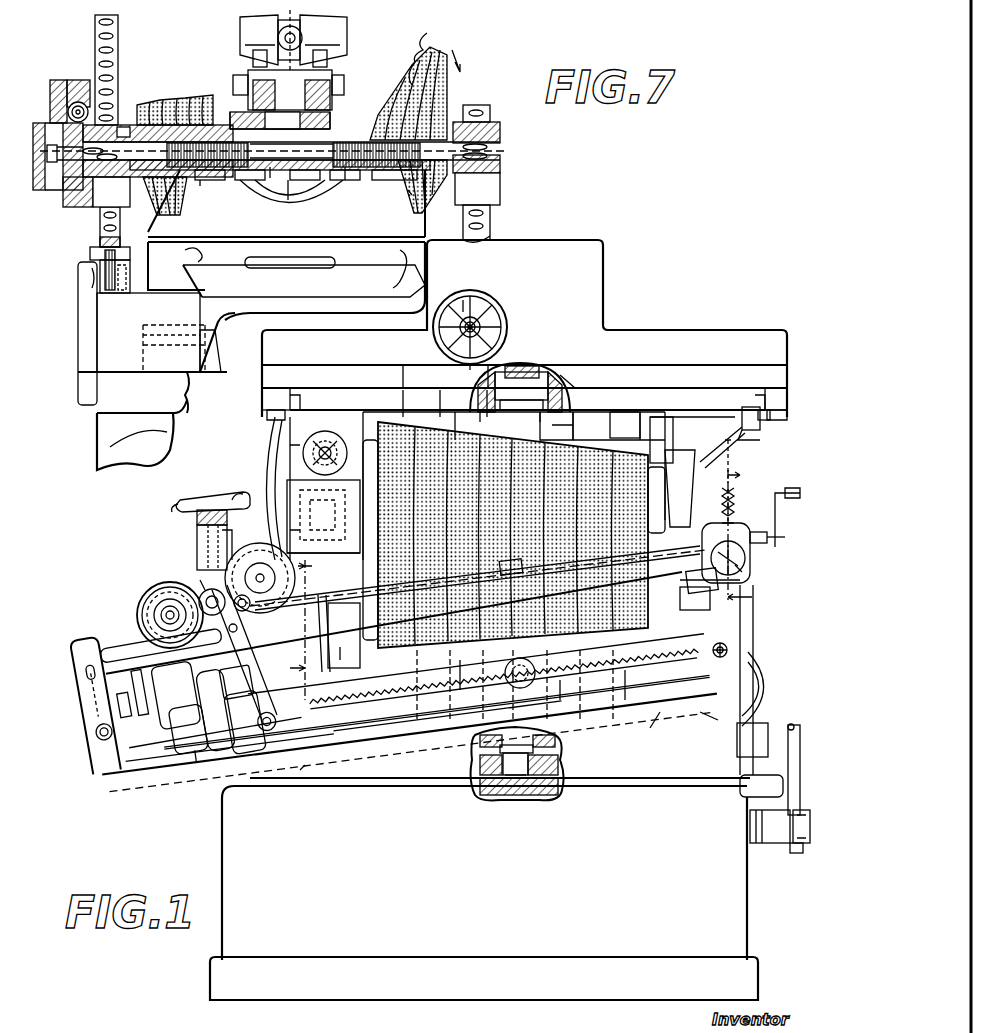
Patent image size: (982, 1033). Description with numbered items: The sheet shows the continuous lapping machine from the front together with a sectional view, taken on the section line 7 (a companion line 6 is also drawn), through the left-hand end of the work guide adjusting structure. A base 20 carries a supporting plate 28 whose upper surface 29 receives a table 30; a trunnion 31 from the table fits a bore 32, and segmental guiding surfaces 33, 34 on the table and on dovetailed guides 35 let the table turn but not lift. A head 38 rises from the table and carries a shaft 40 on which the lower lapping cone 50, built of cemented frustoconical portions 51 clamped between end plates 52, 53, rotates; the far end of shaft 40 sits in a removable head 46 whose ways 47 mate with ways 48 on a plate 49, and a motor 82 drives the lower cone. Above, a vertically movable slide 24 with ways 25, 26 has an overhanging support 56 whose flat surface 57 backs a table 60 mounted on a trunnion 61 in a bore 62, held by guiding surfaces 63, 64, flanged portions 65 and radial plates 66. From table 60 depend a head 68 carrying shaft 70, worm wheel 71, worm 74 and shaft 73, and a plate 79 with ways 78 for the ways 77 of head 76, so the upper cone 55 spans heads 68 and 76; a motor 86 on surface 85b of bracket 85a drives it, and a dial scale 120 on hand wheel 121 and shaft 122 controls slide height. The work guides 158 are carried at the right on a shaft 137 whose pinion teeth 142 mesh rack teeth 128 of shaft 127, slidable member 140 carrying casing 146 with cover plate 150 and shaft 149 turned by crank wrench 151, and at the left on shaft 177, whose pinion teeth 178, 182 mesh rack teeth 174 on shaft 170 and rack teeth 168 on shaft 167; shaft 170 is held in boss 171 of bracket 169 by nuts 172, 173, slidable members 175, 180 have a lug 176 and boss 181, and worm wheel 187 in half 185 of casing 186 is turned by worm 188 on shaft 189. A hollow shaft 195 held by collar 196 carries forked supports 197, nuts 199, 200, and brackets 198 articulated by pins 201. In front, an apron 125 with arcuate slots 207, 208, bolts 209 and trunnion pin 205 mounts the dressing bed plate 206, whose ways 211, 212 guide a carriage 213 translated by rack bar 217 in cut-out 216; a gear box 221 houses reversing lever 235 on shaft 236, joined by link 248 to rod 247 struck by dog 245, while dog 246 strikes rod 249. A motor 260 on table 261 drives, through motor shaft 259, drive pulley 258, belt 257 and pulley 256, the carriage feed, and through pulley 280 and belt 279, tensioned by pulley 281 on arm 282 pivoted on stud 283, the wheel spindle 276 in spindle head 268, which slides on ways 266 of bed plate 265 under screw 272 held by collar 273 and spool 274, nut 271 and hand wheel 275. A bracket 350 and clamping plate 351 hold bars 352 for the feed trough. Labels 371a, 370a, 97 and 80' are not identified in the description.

In FIG. 7, the rack teeth 174 is at (95, 27).
In FIG. 7, the casing half 185 is at (78, 80).
In FIG. 7, the casing 186 is at (60, 66).
In FIG. 7, the worm 188 is at (70, 104).
In FIG. 7, the shaft 189 is at (55, 110).
In FIG. 7, the worm wheel 187 is at (68, 186).
In FIG. 7, the slidable member 175 is at (83, 207).
In FIG. 7, the pinion teeth 178 is at (113, 192).
In FIG. 7, the lug 176 is at (128, 125).
In FIG. 7, the shaft 170 is at (100, 236).
In FIG. 1, the shaft 170 is at (310, 588).
In FIG. 7, the nut 173 is at (90, 256).
In FIG. 7, the boss 171 is at (96, 282).
In FIG. 7, the nut 172 is at (126, 280).
In FIG. 7, the bracket 169 is at (78, 352).
In FIG. 7, the table 30 is at (152, 322).
In FIG. 1, the table 30 is at (545, 740).
In FIG. 7, the segmental guiding surface 33 is at (222, 345).
In FIG. 1, the segmental guiding surface 33 is at (737, 740).
In FIG. 7, the horizontal upper surface 29 is at (142, 356).
In FIG. 1, the horizontal upper surface 29 is at (557, 760).
In FIG. 7, the dovetailed overlapping guides 35 is at (125, 372).
In FIG. 1, the dovetailed overlapping guides 35 is at (770, 735).
In FIG. 7, the segmental guiding surface 34 is at (215, 372).
In FIG. 7, the supporting plate 28 is at (108, 420).
In FIG. 1, the supporting plate 28 is at (560, 762).
In FIG. 7, the base 20 is at (105, 462).
In FIG. 1, the base 20 is at (745, 925).
In FIG. 7, the shaft 177 is at (500, 152).
In FIG. 7, the boss 181 is at (500, 132).
In FIG. 7, the pinion teeth 182 is at (500, 168).
In FIG. 7, the slidable member 180 is at (500, 190).
In FIG. 7, the rack teeth 168 is at (490, 112).
In FIG. 7, the shaft 167 is at (490, 227).
In FIG. 7, the end plate 52 is at (220, 112).
In FIG. 1, the end plate 52 is at (344, 635).
In FIG. 7, the lower lapping cone 50 is at (448, 100).
In FIG. 1, the lower lapping cone 50 is at (425, 648).
In FIG. 7, the frustoconical portions 51 is at (434, 50).
In FIG. 1, the frustoconical portions 51 is at (580, 625).
In FIG. 7, the block 371a is at (245, 33).
In FIG. 7, the work guides 158 is at (250, 55).
In FIG. 7, the yoke 370a is at (250, 82).
In FIG. 7, the pins 201 is at (280, 109).
In FIG. 7, the brackets 198 is at (280, 117).
In FIG. 7, the head 46 is at (300, 192).
In FIG. 1, the head 46 is at (328, 665).
In FIG. 7, the hollow shaft 195 is at (262, 182).
In FIG. 7, the forked supports 197 is at (238, 180).
In FIG. 7, the nut 199 is at (200, 184).
In FIG. 7, the nut 200 is at (288, 205).
In FIG. 7, the collar 196 is at (412, 195).
In FIG. 7, the dovetailed ways 47 is at (210, 272).
In FIG. 7, the ways 48 is at (200, 284).
In FIG. 7, the plate 49 is at (335, 270).
In FIG. 1, the plate 49 is at (445, 700).
In FIG. 1, the overhanging support 56 is at (603, 283).
In FIG. 1, the slide 24 is at (568, 410).
In FIG. 1, the bracket 85a is at (402, 392).
In FIG. 1, the vertical flat surface 85b is at (395, 415).
In FIG. 1, the ways 25 is at (422, 416).
In FIG. 1, the trunnion 61 is at (458, 416).
In FIG. 1, the flanged supporting portions 65 is at (272, 395).
In FIG. 1, the segmental guiding surface 64 is at (296, 398).
In FIG. 1, the segmental guiding surface 63 is at (267, 416).
In FIG. 1, the dial scale 120 is at (478, 318).
In FIG. 1, the hand wheel 121 is at (463, 300).
In FIG. 1, the shaft 122 is at (480, 328).
In FIG. 1, the radial supporting plates 66 is at (515, 370).
In FIG. 1, the bore 62 is at (482, 414).
In FIG. 1, the bearing part 97 is at (540, 412).
In FIG. 1, the flat surface 57 is at (575, 388).
In FIG. 1, the table 60 is at (558, 428).
In FIG. 1, the ways 26 is at (600, 432).
In FIG. 1, the head 76 is at (687, 403).
In FIG. 1, the upper lapping cone 55 is at (648, 450).
In FIG. 1, the dovetailed ways 77 is at (742, 428).
In FIG. 1, the ways 78 is at (766, 420).
In FIG. 1, the plate 79 is at (755, 436).
In FIG. 1, the shaft 127 is at (722, 453).
In FIG. 1, the head 68 is at (268, 445).
In FIG. 1, the electric motor 86 is at (263, 462).
In FIG. 1, the shaft 73 is at (318, 440).
In FIG. 1, the worm 74 is at (330, 445).
In FIG. 1, the worm wheel 71 is at (312, 482).
In FIG. 1, the shaft 70 is at (314, 520).
In FIG. 1, the spindle head 268 is at (323, 548).
In FIG. 1, the hand wheel 275 is at (208, 500).
In FIG. 1, the collar 273 is at (240, 504).
In FIG. 1, the spool 274 is at (178, 510).
In FIG. 1, the screw 272 is at (228, 518).
In FIG. 1, the stationary ways 266 is at (197, 538).
In FIG. 1, the bed plate 265 is at (197, 555).
In FIG. 1, the nut 271 is at (233, 548).
In FIG. 1, the wheel spindle 276 is at (262, 565).
In FIG. 1, the pulley 280 is at (160, 590).
In FIG. 1, the electric motor 260 is at (150, 605).
In FIG. 1, the drive pulley 258 is at (160, 613).
In FIG. 1, the motor shaft 259 is at (166, 617).
In FIG. 1, the belt 279 is at (205, 590).
In FIG. 1, the stud 283 is at (240, 612).
In FIG. 1, the arm 282 is at (236, 632).
In FIG. 1, the belt tightener pulley 281 is at (240, 660).
In FIG. 1, the section line 7 is at (299, 628).
In FIG. 1, the shaft 40 is at (343, 644).
In FIG. 1, the rectangular cut-out portion 216 is at (482, 680).
In FIG. 1, the trunnion pin 205 is at (529, 663).
In FIG. 1, the rack bar 217 is at (570, 682).
In FIG. 1, the ways 211 is at (632, 680).
In FIG. 1, the rod 249 is at (312, 698).
In FIG. 1, the ways 212 is at (462, 712).
In FIG. 1, the apron 125 is at (79, 707).
In FIG. 1, the arcuate slot 207 is at (67, 696).
In FIG. 1, the table 261 is at (150, 600).
In FIG. 1, the belt 257 is at (208, 696).
In FIG. 1, the pulley 256 is at (239, 682).
In FIG. 1, the link 248 is at (252, 720).
In FIG. 1, the reversing lever 235 is at (220, 709).
In FIG. 1, the rod 247 is at (190, 729).
In FIG. 1, the dog 245 is at (125, 670).
In FIG. 1, the carriage 213 is at (170, 735).
In FIG. 1, the gear box 221 is at (195, 735).
In FIG. 1, the shaft 236 is at (340, 722).
In FIG. 1, the dog 246 is at (695, 571).
In FIG. 1, the bolts 209 is at (720, 645).
In FIG. 1, the arcuate slot 208 is at (713, 711).
In FIG. 1, the bed plate 206 is at (663, 729).
In FIG. 1, the electric motor 82 is at (765, 700).
In FIG. 1, the head 38 is at (753, 612).
In FIG. 1, the box 80' is at (761, 786).
In FIG. 1, the bracket 350 is at (770, 825).
In FIG. 1, the clamping plate 351 is at (803, 845).
In FIG. 1, the removable bars 352 is at (790, 850).
In FIG. 1, the trunnion 31 is at (510, 775).
In FIG. 1, the bore 32 is at (522, 778).
In FIG. 1, the shaft 137 is at (750, 570).
In FIG. 1, the pinion teeth 142 is at (745, 558).
In FIG. 1, the cover plate 150 is at (745, 580).
In FIG. 1, the casing 146 is at (735, 523).
In FIG. 1, the rack teeth 128 is at (733, 505).
In FIG. 1, the shaft 149 is at (785, 538).
In FIG. 1, the crank wrench 151 is at (788, 492).
In FIG. 1, the section line 6 is at (751, 537).
In FIG. 1, the slidable member 140 is at (703, 580).
In FIG. 1, the end plate 53 is at (695, 598).